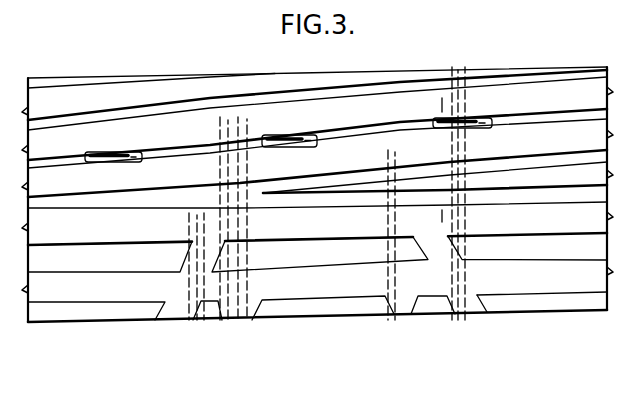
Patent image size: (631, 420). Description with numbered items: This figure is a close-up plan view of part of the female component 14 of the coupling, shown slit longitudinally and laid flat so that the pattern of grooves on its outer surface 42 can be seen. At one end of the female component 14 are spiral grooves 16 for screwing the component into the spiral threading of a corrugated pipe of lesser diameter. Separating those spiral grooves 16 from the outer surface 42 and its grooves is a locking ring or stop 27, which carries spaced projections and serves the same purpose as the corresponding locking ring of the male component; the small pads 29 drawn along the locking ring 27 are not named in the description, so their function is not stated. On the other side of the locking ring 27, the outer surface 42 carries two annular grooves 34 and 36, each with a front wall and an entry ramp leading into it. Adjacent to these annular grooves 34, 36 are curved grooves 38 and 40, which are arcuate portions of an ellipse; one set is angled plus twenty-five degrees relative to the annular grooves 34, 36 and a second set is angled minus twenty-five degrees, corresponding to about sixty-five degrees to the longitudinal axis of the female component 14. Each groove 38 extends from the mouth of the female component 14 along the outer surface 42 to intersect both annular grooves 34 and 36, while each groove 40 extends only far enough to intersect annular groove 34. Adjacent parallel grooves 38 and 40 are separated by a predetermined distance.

The female component 14 is at (580, 340).
The spiral grooves 16 is at (543, 94).
The locking ring 27 is at (420, 128).
The contact pads 29 is at (282, 135).
The annular groove 34 is at (548, 280).
The annular groove 36 is at (517, 222).
The curved grooves 38 is at (173, 313).
The curved grooves 40 is at (250, 312).
The outer surface 42 is at (133, 255).